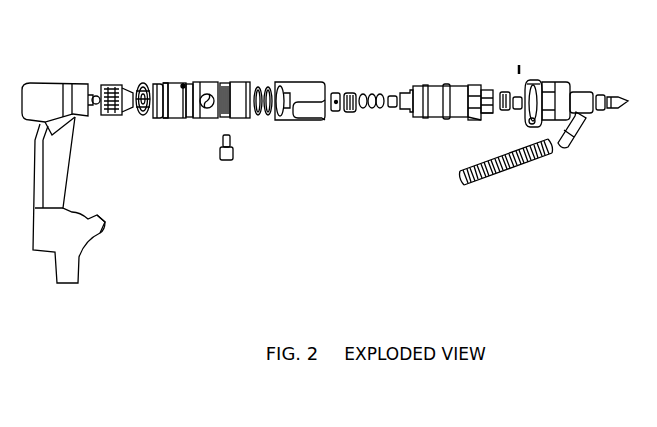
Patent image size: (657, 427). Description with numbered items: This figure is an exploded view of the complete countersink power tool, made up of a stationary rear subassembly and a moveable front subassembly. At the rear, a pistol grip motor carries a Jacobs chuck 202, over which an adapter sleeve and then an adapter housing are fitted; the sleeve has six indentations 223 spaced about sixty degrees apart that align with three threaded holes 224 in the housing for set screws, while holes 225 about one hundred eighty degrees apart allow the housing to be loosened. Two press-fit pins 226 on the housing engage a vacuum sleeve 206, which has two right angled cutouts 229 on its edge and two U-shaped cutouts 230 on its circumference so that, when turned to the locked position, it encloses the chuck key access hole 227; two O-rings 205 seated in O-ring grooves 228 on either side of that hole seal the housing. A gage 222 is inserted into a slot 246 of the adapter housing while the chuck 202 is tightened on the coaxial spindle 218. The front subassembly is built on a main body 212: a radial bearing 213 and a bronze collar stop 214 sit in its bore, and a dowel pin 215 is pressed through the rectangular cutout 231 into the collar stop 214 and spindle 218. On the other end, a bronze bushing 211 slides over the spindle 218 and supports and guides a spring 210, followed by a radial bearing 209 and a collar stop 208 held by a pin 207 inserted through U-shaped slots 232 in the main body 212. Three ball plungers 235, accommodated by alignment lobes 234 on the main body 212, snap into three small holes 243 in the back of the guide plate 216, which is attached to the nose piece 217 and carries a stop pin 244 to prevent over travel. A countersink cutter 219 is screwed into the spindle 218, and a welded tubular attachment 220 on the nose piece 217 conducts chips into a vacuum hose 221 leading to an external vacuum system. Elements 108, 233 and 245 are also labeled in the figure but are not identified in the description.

The toothed drive disc 108 is at (138, 83).
The Jacobs chuck 202 is at (108, 85).
The O-rings 205 is at (268, 86).
The vacuum sleeve 206 is at (291, 92).
The pin 207 is at (337, 92).
The collar stop 208 is at (336, 104).
The radial bearing 209 is at (349, 113).
The spring 210 is at (372, 94).
The bronze bushing 211 is at (392, 108).
The main body 212 is at (437, 118).
The radial bearing 213 is at (505, 91).
The bronze collar stop 214 is at (497, 114).
The dowel pin 215 is at (520, 62).
The guide plate 216 is at (535, 85).
The nose piece 217 is at (548, 82).
The coaxial spindle 218 is at (600, 111).
The countersink cutter 219 is at (614, 110).
The tubular attachment 220 is at (568, 142).
The vacuum hose 221 is at (522, 160).
The gage 222 is at (232, 158).
The indentations 223 is at (149, 118).
The threaded holes 224 is at (165, 118).
The holes 225 is at (177, 119).
The pins 226 is at (182, 85).
The chuck key access hole 227 is at (207, 108).
The O-ring grooves 228 is at (220, 83).
The right angled cutouts 229 is at (278, 114).
The U-shaped cutouts 230 is at (307, 116).
The rectangular cutout 231 is at (476, 85).
The U-shaped slots 232 is at (405, 89).
The collar 233 is at (489, 89).
The alignment lobes 234 is at (474, 119).
The ball plungers 235 is at (538, 80).
The small holes 243 is at (532, 124).
The stop pin 244 is at (518, 110).
The trigger 245 is at (105, 223).
The slot 246 is at (227, 83).